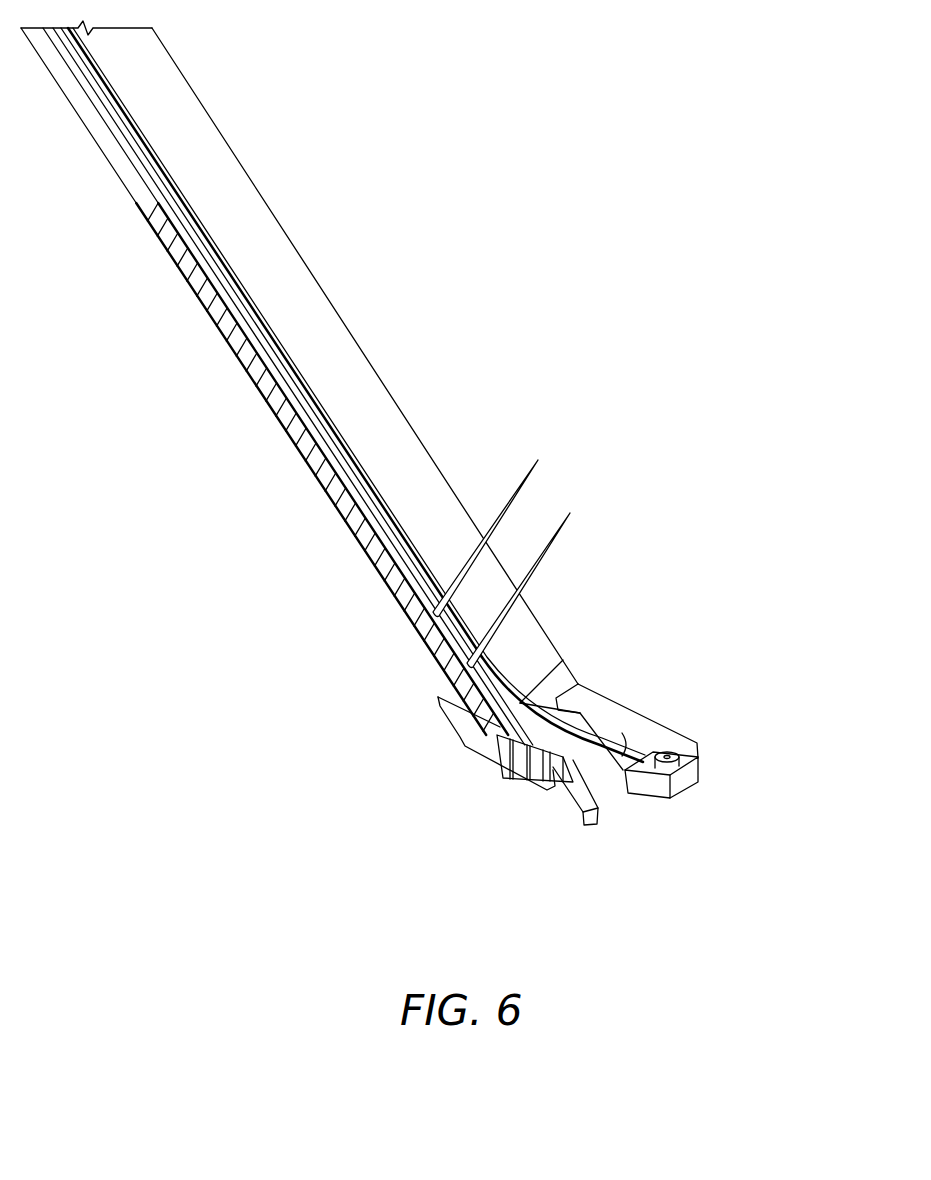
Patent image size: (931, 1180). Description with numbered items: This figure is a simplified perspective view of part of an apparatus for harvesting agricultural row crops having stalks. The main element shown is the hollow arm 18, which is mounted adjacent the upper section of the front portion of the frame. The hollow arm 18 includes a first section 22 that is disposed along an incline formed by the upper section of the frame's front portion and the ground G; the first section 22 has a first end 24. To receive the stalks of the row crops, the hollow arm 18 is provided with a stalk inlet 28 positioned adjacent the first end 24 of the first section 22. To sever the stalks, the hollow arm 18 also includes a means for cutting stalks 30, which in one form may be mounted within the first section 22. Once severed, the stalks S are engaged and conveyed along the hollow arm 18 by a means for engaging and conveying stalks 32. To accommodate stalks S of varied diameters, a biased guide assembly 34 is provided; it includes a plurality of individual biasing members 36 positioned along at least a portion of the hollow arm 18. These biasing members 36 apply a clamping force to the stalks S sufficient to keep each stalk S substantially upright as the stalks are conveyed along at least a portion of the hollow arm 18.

The hollow arm 18 is at (370, 353).
The first section 22 is at (277, 213).
The first end 24 is at (692, 778).
The stalk inlet 28 is at (600, 808).
The means for cutting stalks 30 is at (620, 743).
The means for engaging and conveying stalks 32 is at (390, 530).
The biased guide assembly 34 is at (393, 602).
The biasing members 36 is at (347, 510).
The stalks S is at (510, 492).
The ground G is at (823, 750).